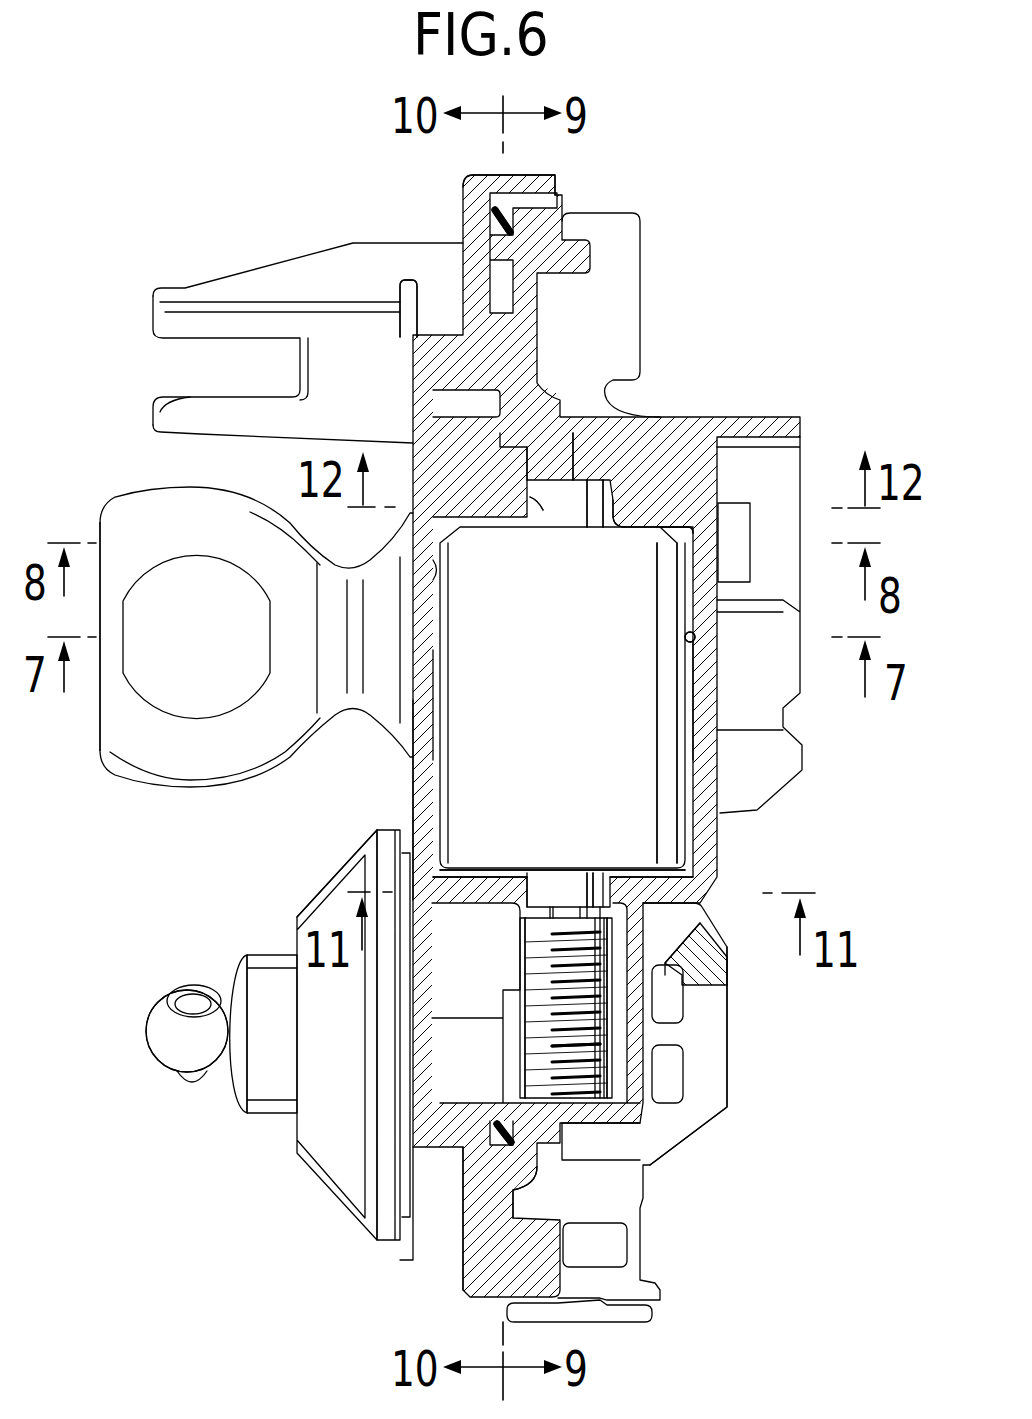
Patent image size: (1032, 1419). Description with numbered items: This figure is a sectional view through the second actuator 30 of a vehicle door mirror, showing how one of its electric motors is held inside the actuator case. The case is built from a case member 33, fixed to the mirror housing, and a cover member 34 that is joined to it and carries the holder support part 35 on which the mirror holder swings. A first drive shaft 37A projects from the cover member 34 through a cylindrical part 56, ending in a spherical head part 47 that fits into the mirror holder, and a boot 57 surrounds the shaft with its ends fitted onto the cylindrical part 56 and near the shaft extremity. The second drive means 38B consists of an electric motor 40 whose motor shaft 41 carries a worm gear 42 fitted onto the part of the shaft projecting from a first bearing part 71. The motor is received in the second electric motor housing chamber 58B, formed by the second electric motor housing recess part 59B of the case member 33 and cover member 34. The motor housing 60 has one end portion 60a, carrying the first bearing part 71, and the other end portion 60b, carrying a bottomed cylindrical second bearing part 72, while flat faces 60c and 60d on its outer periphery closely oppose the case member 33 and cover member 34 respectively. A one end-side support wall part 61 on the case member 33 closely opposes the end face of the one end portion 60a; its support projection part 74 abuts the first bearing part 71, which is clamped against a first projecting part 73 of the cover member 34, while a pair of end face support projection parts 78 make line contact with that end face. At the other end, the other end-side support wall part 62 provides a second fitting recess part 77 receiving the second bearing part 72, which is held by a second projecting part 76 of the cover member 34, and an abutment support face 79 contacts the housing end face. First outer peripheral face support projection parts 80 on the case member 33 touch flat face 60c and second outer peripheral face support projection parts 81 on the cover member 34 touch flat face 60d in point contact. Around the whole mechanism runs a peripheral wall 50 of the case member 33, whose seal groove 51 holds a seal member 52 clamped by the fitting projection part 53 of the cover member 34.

The second actuator 30 is at (434, 1268).
The case member 33 is at (712, 1097).
The cover member 34 is at (417, 805).
The holder support part 35 is at (190, 770).
The first drive shaft 37A is at (228, 1088).
The second drive means 38B is at (612, 1006).
The electric motor 40 is at (572, 726).
The motor shaft 41 is at (560, 912).
The worm gear 42 is at (530, 1045).
The spherical head part 47 is at (160, 1045).
The peripheral wall 50 is at (468, 196).
The seal groove 51 is at (507, 1143).
The seal member 52 is at (513, 218).
The fitting projection part 53 is at (492, 1150).
The cylindrical part 56 is at (385, 1180).
The boot 57 is at (318, 913).
The second electric motor housing chamber 58B is at (425, 768).
The second electric motor housing recess part 59B is at (680, 805).
The motor housing 60 is at (667, 583).
The one end portion of motor housing 60a is at (670, 853).
The other end portion of motor housing 60b is at (680, 527).
The flat face 60c is at (698, 700).
The flat face 60d is at (415, 690).
The one end-side support wall part 61 is at (603, 897).
The other end-side support wall part 62 is at (630, 515).
The first bearing part 71 is at (537, 897).
The second bearing part 72 is at (560, 493).
The first projecting part 73 is at (488, 878).
The support projection part 74 is at (600, 893).
The second projecting part 76 is at (540, 515).
The second fitting recess part 77 is at (600, 505).
The end face support projection part 78 is at (642, 875).
The abutment support face 79 is at (633, 530).
The first outer peripheral face support projection part 80 is at (687, 639).
The second outer peripheral face support projection part 81 is at (437, 568).